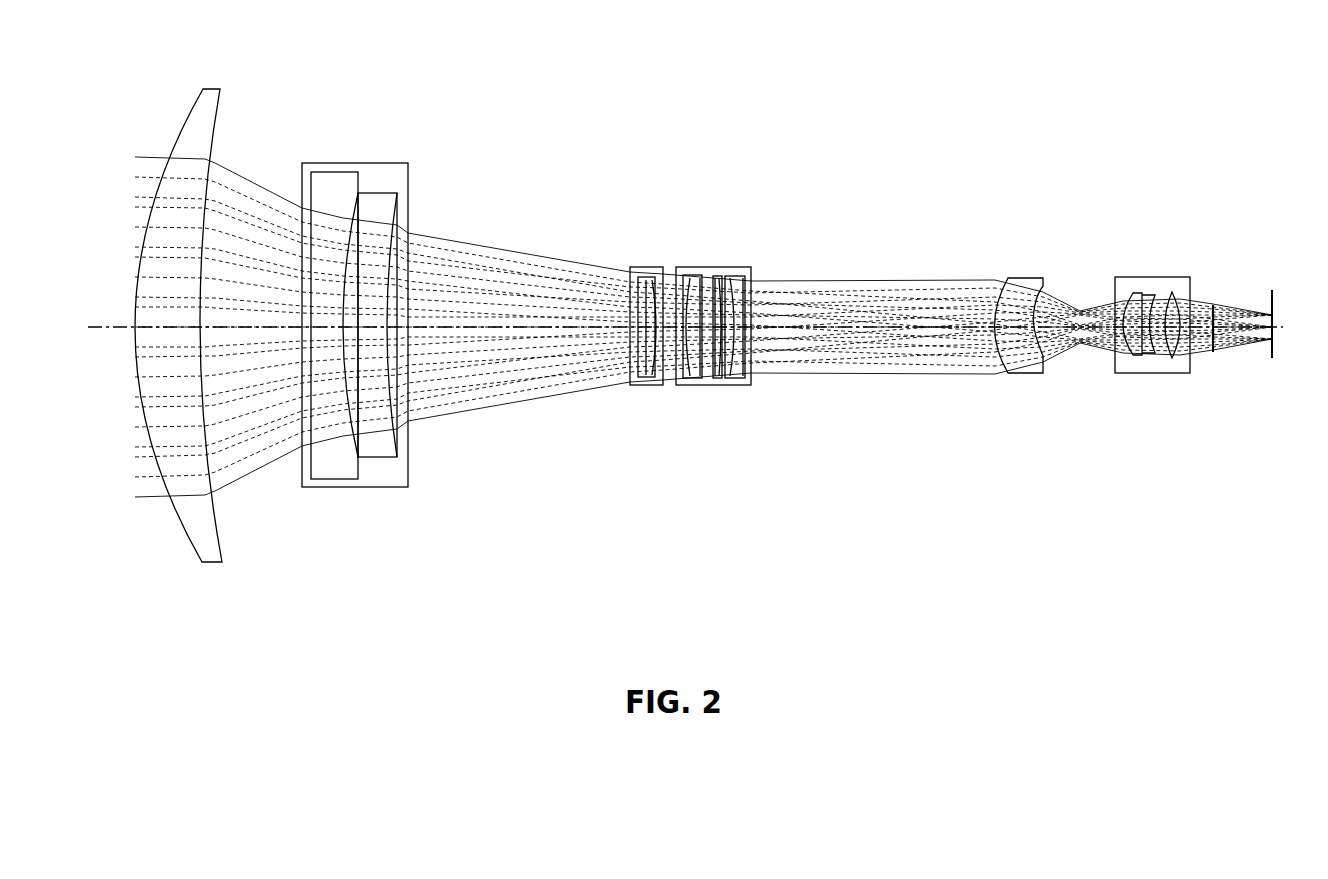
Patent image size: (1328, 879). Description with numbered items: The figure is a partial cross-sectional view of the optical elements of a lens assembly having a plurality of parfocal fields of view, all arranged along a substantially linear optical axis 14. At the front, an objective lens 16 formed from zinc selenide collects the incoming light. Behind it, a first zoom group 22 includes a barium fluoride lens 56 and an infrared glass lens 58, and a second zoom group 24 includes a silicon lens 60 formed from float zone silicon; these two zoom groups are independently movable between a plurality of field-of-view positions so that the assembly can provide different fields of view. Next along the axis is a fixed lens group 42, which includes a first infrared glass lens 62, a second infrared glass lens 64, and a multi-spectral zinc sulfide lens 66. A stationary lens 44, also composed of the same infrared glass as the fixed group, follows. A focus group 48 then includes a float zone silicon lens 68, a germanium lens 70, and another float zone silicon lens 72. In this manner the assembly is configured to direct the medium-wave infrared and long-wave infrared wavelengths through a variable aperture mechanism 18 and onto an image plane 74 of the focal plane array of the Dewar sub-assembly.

The optical axis 14 is at (92, 325).
The objective lens 16 is at (181, 524).
The variable aperture mechanism 18 is at (1214, 353).
The first zoom group 22 is at (377, 322).
The second zoom group 24 is at (647, 323).
The fixed lens group 42 is at (742, 308).
The stationary lens 44 is at (1022, 374).
The focus group 48 is at (1172, 311).
The barium fluoride lens 56 is at (357, 172).
The Infrared Glass 25 lens 58 is at (386, 193).
The silicon lens 60 is at (648, 278).
The first Infrared Glass 24 lens 62 is at (688, 275).
The second IRG 24 lens 64 is at (718, 276).
The multi-spectral zinc sulfide lens 66 is at (752, 278).
The float zone silicon lens 68 is at (1132, 294).
The germanium lens 70 is at (1150, 294).
The float zone silicon lens 72 is at (1175, 297).
The image plane 74 is at (1272, 290).